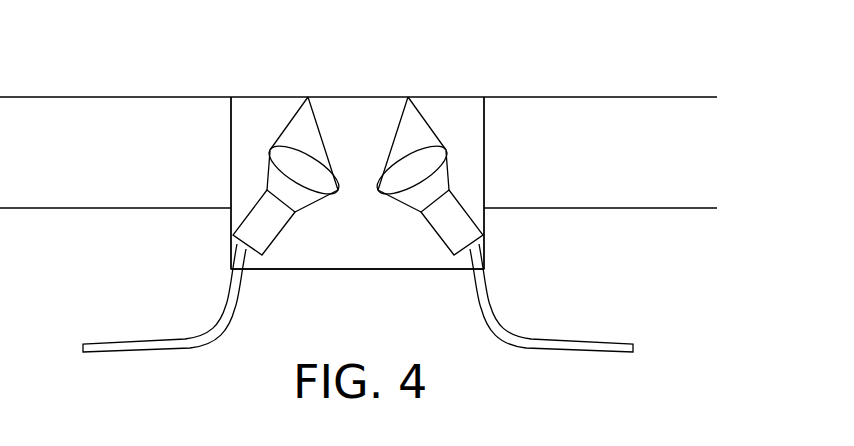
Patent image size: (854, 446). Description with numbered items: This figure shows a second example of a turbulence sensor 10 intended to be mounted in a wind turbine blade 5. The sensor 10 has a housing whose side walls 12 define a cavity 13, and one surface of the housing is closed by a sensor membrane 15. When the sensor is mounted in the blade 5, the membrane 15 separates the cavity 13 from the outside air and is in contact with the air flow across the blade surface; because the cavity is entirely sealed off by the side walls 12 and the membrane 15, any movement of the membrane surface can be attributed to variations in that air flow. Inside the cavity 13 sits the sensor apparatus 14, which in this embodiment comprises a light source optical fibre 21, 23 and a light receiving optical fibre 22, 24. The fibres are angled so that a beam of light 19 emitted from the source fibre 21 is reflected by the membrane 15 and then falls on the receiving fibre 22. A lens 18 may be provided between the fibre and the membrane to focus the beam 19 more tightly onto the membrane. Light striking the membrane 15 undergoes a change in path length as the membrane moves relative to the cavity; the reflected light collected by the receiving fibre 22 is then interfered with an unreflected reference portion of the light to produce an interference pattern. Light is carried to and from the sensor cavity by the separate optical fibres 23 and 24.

The wind turbine blade 5 is at (667, 108).
The sensor 10 is at (224, 85).
The side walls 12 is at (486, 223).
The cavity 13 is at (353, 248).
The sensor apparatus 14 is at (247, 165).
The sensor membrane 15 is at (443, 97).
The lens 18 is at (297, 157).
The beam of light 19 is at (438, 146).
The light source optical fibre 21 is at (270, 249).
The light receiving optical fibre 22 is at (442, 235).
The light source optical fibre 23 is at (233, 315).
The light receiving optical fibre 24 is at (483, 317).